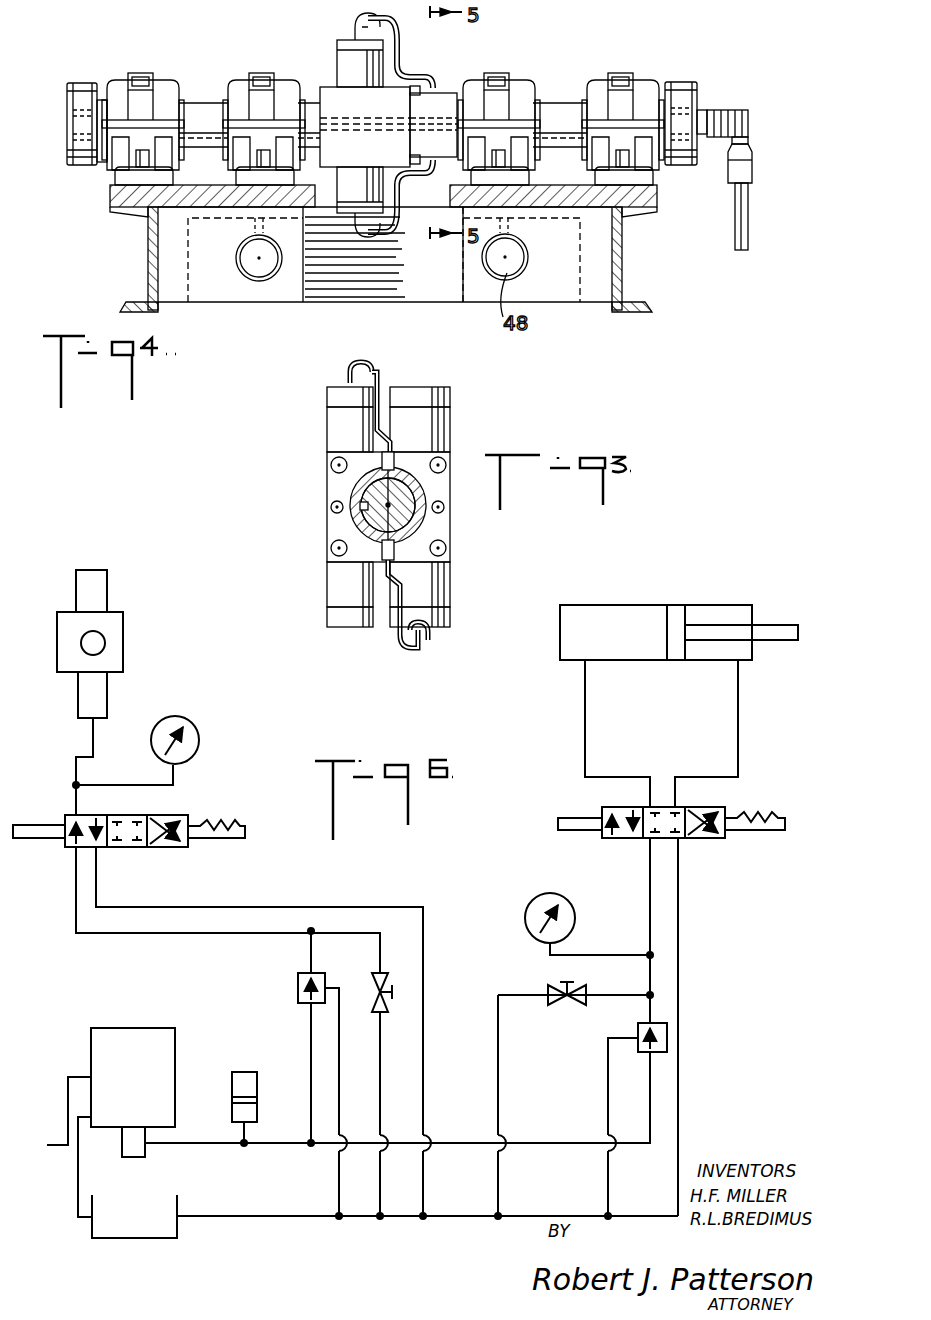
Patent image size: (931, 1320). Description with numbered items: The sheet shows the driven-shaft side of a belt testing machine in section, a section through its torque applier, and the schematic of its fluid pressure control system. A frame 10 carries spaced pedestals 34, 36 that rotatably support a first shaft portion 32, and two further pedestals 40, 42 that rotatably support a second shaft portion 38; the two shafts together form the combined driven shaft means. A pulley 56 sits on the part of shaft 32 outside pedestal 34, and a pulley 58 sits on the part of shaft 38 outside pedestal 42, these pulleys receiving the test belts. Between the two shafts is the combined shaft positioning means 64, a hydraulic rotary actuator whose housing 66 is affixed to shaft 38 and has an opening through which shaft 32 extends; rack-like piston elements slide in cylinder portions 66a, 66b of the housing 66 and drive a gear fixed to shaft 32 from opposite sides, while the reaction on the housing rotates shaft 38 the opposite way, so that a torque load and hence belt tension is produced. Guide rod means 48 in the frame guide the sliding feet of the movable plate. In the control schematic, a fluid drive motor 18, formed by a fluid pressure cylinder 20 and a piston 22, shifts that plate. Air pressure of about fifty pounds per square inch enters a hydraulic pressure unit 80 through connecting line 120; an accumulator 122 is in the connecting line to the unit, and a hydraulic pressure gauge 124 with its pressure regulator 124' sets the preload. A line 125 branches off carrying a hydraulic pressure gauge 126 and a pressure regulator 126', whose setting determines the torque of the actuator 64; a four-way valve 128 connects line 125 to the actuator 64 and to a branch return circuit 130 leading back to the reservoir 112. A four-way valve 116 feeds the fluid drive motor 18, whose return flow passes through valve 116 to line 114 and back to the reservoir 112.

In FIG. 4, the frame 10 is at (622, 260).
In FIG. 4, the first shaft portion 32 is at (195, 115).
In FIG. 4, the pedestal 34 is at (162, 82).
In FIG. 4, the pedestal 36 is at (283, 82).
In FIG. 4, the second shaft portion 38 is at (557, 115).
In FIG. 5, the second shaft portion 38 is at (412, 515).
In FIG. 4, the pedestal 40 is at (522, 82).
In FIG. 4, the pedestal 42 is at (640, 80).
In FIG. 4, the guide rod means 48 is at (260, 275).
In FIG. 4, the pulley 56 is at (73, 166).
In FIG. 4, the pulley 58 is at (690, 86).
In FIG. 4, the combined shaft positioning means 64 is at (327, 37).
In FIG. 6, the combined shaft positioning means 64 is at (133, 648).
In FIG. 5, the housing 66 is at (443, 420).
In FIG. 5, the cylinder portion 66a is at (340, 588).
In FIG. 5, the cylinder portion 66b is at (438, 588).
In FIG. 6, the fluid drive motor 18 is at (674, 600).
In FIG. 6, the fluid pressure cylinder 20 is at (605, 603).
In FIG. 6, the piston 22 is at (677, 615).
In FIG. 6, the hydraulic pressure unit 80 is at (131, 1030).
In FIG. 6, the reservoir 112 is at (178, 1205).
In FIG. 6, the line 114 is at (678, 895).
In FIG. 6, the four-way valve 116 is at (713, 840).
In FIG. 6, the connecting line 120 is at (68, 1085).
In FIG. 6, the accumulator 122 is at (257, 1077).
In FIG. 6, the hydraulic pressure gauge 124 is at (587, 906).
In FIG. 6, the pressure regulator 124' is at (683, 1118).
In FIG. 6, the line 125 is at (78, 931).
In FIG. 6, the hydraulic pressure gauge 126 is at (209, 739).
In FIG. 6, the pressure regulator 126' is at (289, 1073).
In FIG. 6, the four-way valve 128 is at (188, 815).
In FIG. 6, the branch return circuit 130 is at (427, 1012).